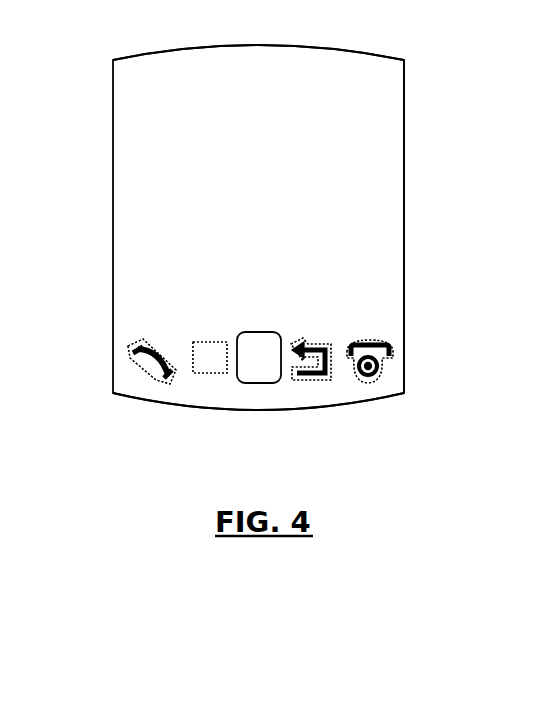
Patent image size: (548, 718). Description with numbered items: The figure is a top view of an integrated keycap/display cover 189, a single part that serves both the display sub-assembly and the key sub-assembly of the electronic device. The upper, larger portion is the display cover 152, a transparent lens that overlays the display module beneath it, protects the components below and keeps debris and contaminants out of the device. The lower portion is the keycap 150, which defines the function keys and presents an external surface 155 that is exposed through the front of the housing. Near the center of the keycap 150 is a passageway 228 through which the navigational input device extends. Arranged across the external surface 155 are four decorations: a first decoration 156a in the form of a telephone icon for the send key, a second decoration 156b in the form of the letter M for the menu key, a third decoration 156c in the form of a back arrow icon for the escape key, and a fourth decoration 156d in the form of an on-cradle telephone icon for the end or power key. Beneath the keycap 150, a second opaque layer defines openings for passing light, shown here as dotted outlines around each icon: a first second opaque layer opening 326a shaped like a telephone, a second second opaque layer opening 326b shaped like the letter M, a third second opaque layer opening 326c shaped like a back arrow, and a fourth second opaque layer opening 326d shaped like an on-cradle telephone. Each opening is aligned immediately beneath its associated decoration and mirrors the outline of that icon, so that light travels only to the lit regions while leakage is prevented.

The keycap 150 is at (124, 382).
The display cover 152 is at (133, 120).
The external surface 155 is at (402, 357).
The first decoration 156a is at (148, 347).
The second decoration 156b is at (220, 345).
The third decoration 156c is at (315, 346).
The fourth decoration 156d is at (368, 347).
The integrated keycap/display cover 189 is at (390, 200).
The passageway 228 is at (243, 384).
The first second opaque layer opening 326a is at (158, 370).
The second second opaque layer opening 326b is at (217, 372).
The third second opaque layer opening 326c is at (330, 378).
The fourth second opaque layer opening 326d is at (380, 380).